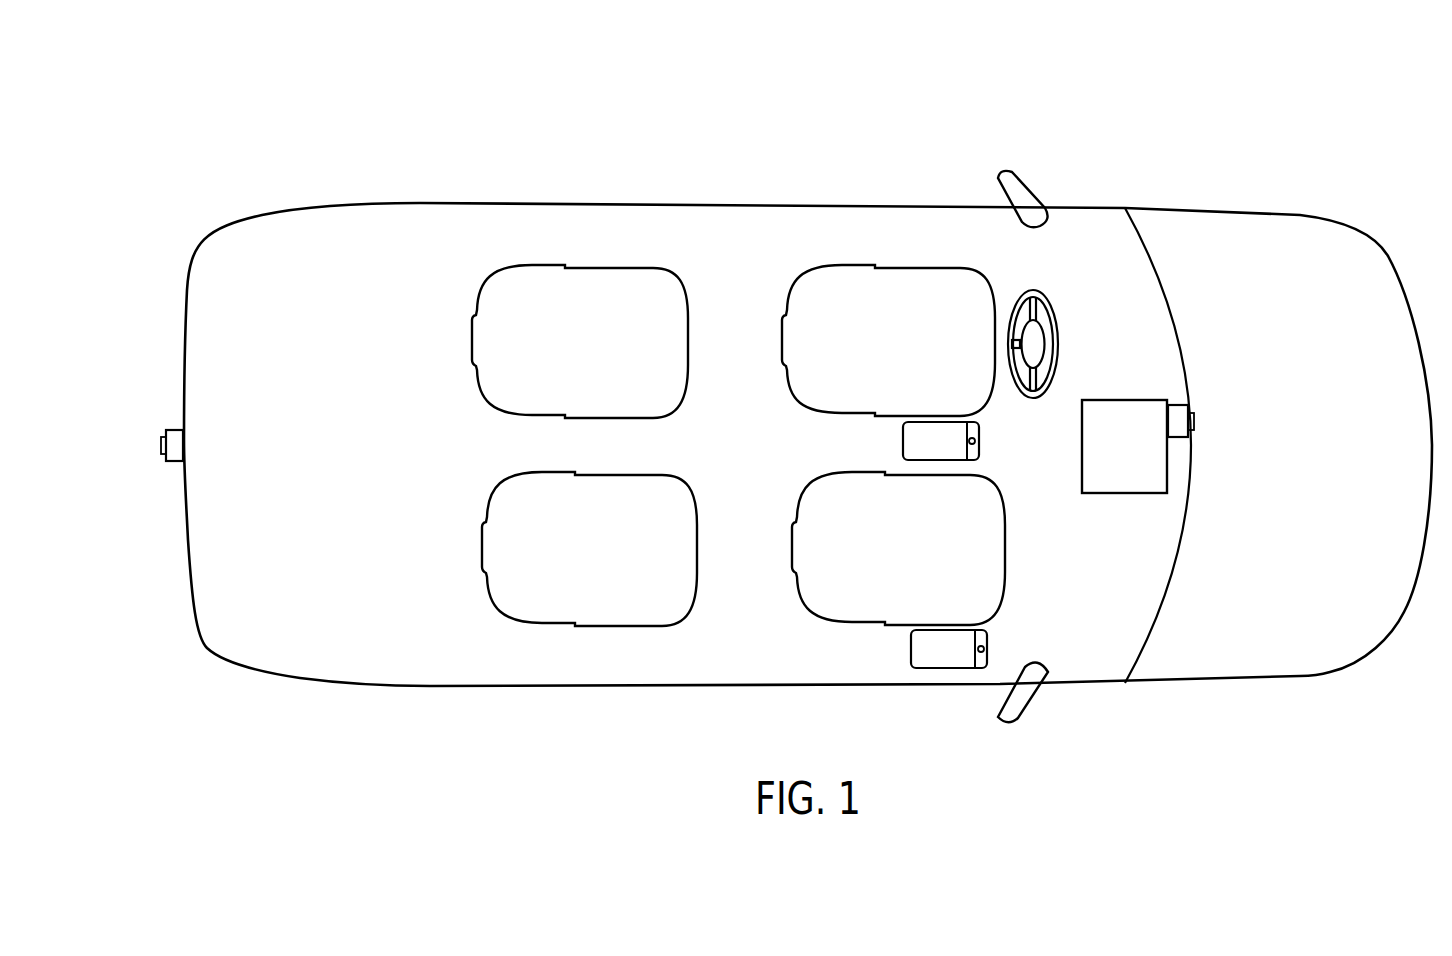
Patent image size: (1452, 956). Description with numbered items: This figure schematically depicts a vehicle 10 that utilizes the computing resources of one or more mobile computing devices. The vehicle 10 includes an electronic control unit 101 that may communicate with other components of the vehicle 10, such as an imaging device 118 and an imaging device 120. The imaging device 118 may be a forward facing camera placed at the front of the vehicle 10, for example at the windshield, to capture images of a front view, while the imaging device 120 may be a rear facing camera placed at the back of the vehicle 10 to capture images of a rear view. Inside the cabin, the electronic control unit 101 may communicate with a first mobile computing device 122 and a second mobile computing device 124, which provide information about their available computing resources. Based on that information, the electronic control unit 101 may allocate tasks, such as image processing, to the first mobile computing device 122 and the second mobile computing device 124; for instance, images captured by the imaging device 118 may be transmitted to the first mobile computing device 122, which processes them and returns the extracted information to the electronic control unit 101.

The vehicle 10 is at (329, 133).
The electronic control unit (ECU) 101 is at (1118, 398).
The imaging device 118 is at (1190, 406).
The imaging device 120 is at (178, 428).
The first mobile computing device 122 is at (903, 439).
The second mobile computing device 124 is at (911, 647).